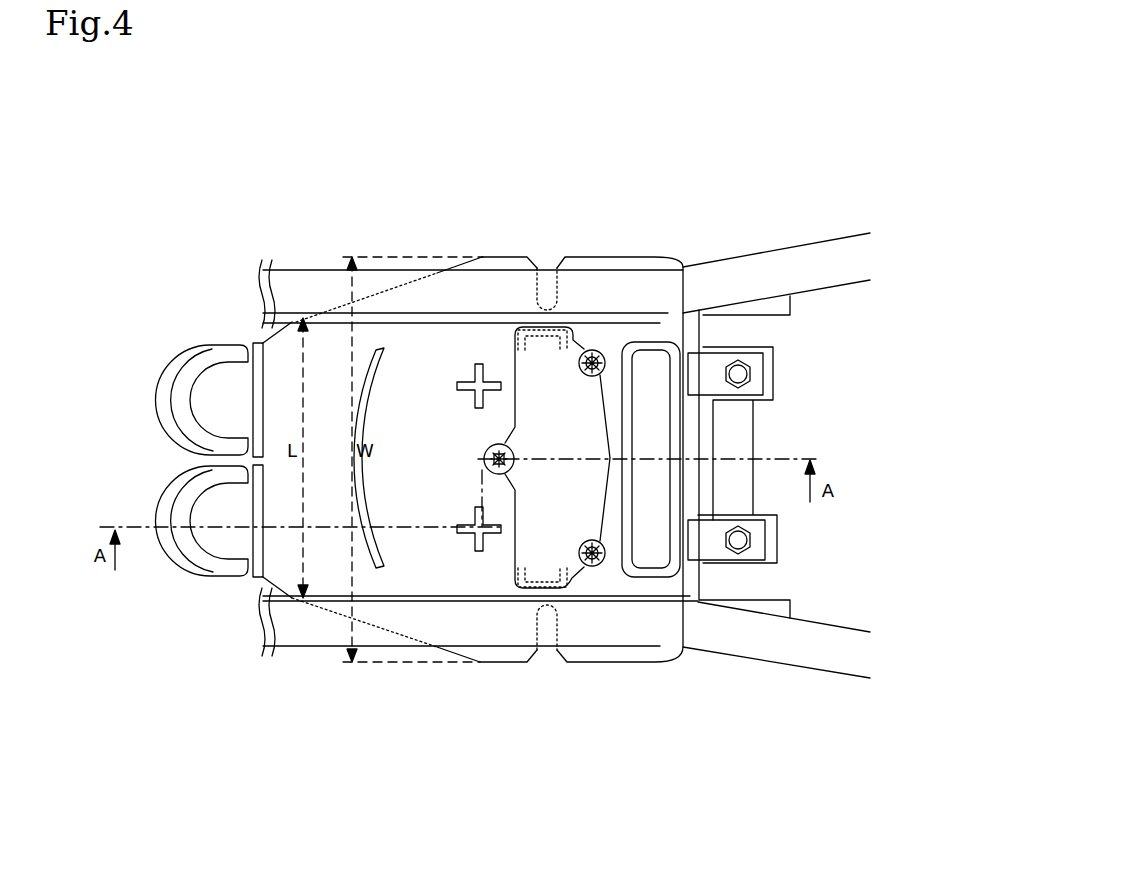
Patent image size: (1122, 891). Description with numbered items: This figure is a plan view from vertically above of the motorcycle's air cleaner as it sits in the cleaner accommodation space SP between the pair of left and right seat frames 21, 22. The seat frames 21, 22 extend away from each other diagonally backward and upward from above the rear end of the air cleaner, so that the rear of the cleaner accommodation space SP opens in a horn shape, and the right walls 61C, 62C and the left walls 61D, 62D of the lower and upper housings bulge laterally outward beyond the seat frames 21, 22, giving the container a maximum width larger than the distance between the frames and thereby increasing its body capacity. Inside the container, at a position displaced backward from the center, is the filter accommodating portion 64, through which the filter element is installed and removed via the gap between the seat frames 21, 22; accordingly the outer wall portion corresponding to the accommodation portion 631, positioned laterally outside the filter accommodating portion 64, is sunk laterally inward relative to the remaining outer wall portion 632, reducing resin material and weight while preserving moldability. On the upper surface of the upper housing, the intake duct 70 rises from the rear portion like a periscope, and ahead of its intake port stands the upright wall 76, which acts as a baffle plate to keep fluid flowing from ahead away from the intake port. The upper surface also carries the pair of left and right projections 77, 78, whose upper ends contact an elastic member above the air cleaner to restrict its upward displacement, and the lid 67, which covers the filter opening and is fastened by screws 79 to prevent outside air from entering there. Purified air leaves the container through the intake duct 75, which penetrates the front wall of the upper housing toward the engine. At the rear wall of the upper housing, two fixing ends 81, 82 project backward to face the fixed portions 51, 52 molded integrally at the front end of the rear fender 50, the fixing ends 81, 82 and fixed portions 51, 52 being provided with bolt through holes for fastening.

The seat frame 21 is at (306, 637).
The seat frame 22 is at (313, 268).
The rear fender 50 is at (740, 330).
The fixed portion 51 is at (775, 563).
The fixed portion 52 is at (772, 375).
The right wall 61C is at (772, 687).
The right wall 62C is at (674, 680).
The left wall 61D is at (762, 225).
The left wall 62D is at (655, 240).
The filter accommodating portion 64 is at (523, 323).
The outer wall portion corresponding to the accommodation portion 631 is at (548, 294).
The remaining outer wall portion 632 is at (514, 252).
The lid 67 is at (525, 380).
The intake duct 70 is at (657, 542).
The intake duct 75 is at (170, 415).
The upright wall 76 is at (378, 347).
The projection 77 is at (473, 542).
The projection 78 is at (470, 378).
The screw 79 is at (597, 350).
The fixing end 81 is at (752, 528).
The fixing end 82 is at (760, 358).
The cleaner accommodation space SP is at (238, 594).